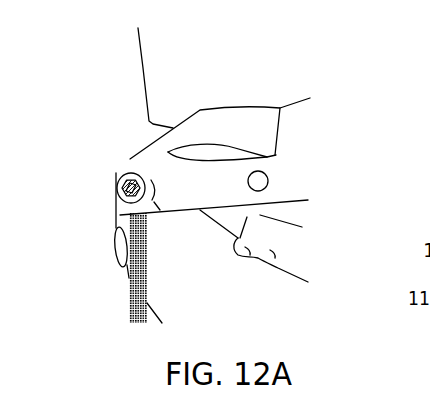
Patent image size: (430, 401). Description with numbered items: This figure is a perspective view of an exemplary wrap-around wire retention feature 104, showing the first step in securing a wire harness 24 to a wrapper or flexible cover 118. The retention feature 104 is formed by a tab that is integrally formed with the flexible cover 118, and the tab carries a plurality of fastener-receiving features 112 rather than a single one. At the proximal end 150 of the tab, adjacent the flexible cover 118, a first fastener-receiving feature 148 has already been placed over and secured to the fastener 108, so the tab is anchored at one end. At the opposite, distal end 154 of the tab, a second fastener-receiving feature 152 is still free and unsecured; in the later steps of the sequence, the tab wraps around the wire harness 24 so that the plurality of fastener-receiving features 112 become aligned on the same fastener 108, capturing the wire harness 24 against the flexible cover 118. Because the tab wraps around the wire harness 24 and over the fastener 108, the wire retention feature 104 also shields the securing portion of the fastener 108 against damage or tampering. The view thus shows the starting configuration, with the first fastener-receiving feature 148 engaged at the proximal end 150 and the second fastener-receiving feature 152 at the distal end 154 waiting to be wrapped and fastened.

The wire harness 24 is at (129, 300).
The wire retention feature 104 is at (88, 190).
The fastener 108 is at (110, 163).
The fastener-receiving features 112 is at (223, 145).
The flexible cover 118 is at (139, 88).
The first fastener-receiving feature 148 is at (128, 133).
The proximal end 150 is at (116, 241).
The second fastener-receiving feature 152 is at (285, 153).
The distal end 154 is at (295, 182).